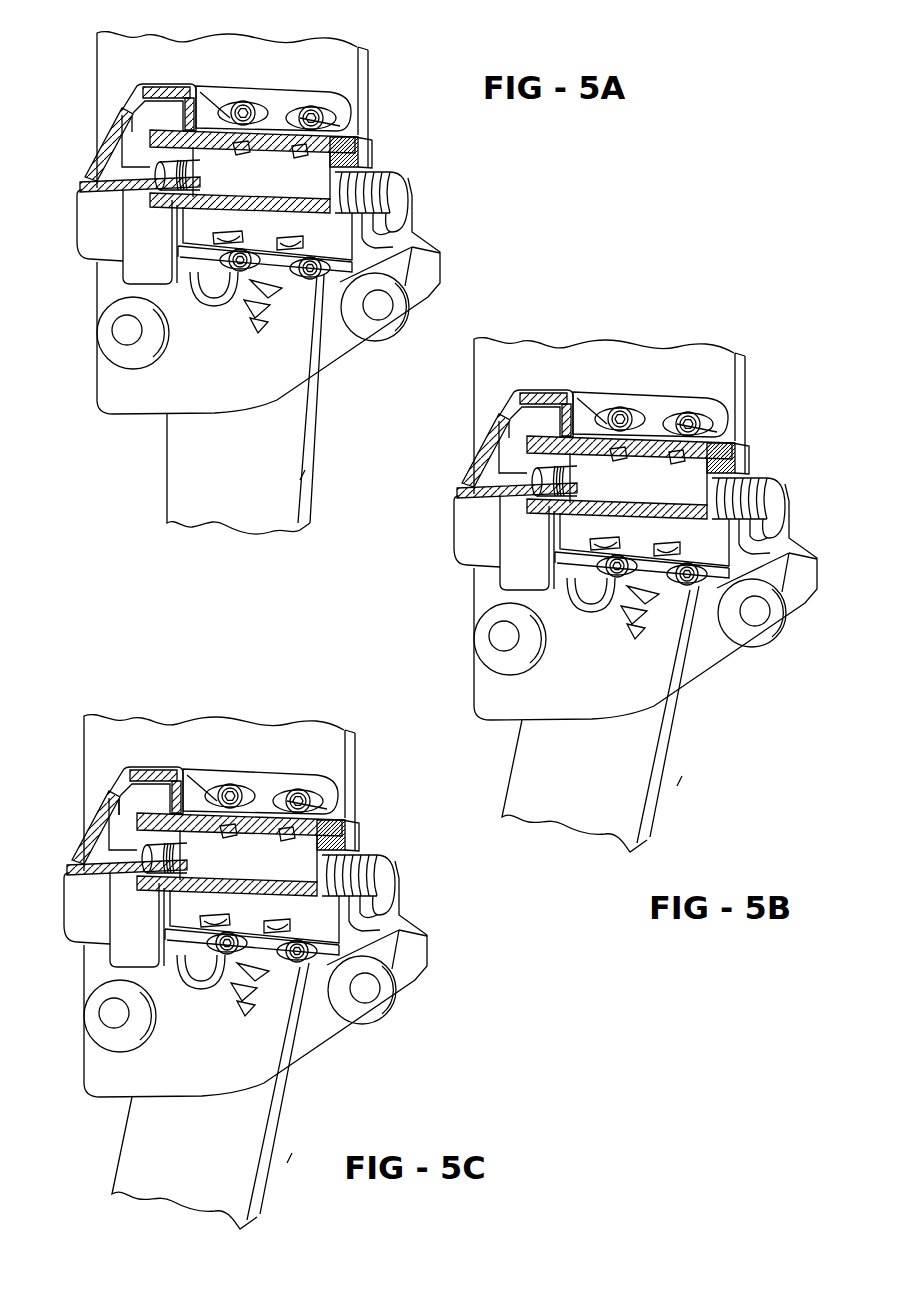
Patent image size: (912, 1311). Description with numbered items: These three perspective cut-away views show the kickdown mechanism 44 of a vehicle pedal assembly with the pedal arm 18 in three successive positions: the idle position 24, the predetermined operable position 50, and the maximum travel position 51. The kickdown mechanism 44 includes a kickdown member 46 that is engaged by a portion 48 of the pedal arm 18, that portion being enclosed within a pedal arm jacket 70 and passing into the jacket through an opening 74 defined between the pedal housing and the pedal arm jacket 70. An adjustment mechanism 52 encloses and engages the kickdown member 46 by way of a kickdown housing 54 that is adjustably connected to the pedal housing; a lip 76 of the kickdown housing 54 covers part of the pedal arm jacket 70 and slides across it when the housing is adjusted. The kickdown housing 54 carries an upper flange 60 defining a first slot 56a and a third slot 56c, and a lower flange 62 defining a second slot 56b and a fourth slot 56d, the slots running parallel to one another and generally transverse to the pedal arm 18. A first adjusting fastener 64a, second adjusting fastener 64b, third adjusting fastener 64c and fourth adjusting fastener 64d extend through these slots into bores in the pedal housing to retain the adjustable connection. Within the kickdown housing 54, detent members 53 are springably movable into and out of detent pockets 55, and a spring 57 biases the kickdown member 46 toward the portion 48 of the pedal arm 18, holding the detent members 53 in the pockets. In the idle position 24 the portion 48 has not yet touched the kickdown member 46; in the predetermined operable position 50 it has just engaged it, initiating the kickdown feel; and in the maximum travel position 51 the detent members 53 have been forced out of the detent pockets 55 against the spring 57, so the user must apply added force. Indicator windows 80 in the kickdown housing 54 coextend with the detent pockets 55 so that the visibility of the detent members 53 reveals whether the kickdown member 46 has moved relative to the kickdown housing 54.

In FIG. 5A, the pedal arm 18 is at (166, 478).
In FIG. 5B, the pedal arm 18 is at (544, 786).
In FIG. 5C, the pedal arm 18 is at (154, 1163).
In FIG. 5A, the idle position 24 is at (338, 472).
In FIG. 5B, the predetermined operable position 50 is at (722, 745).
In FIG. 5C, the maximum travel position 51 is at (317, 1121).
In FIG. 5A, the kickdown mechanism 44 is at (383, 160).
In FIG. 5B, the kickdown mechanism 44 is at (673, 456).
In FIG. 5C, the kickdown mechanism 44 is at (283, 833).
In FIG. 5A, the kickdown member 46 is at (180, 233).
In FIG. 5B, the kickdown member 46 is at (538, 528).
In FIG. 5C, the kickdown member 46 is at (148, 905).
In FIG. 5A, the portion of the pedal arm 48 is at (77, 190).
In FIG. 5B, the portion of the pedal arm 48 is at (492, 443).
In FIG. 5C, the portion of the pedal arm 48 is at (102, 820).
In FIG. 5A, the adjustment mechanism 52 is at (332, 318).
In FIG. 5B, the adjustment mechanism 52 is at (645, 529).
In FIG. 5C, the adjustment mechanism 52 is at (255, 906).
In FIG. 5A, the detent members 53 is at (226, 172).
In FIG. 5B, the detent members 53 is at (644, 522).
In FIG. 5C, the detent members 53 is at (254, 899).
In FIG. 5A, the kickdown housing 54 is at (373, 280).
In FIG. 5B, the kickdown housing 54 is at (637, 623).
In FIG. 5C, the kickdown housing 54 is at (245, 1000).
In FIG. 5A, the detent pockets 55 is at (300, 158).
In FIG. 5B, the detent pockets 55 is at (647, 476).
In FIG. 5C, the detent pockets 55 is at (257, 853).
In FIG. 5A, the first slot 56a is at (217, 118).
In FIG. 5B, the first slot 56a is at (560, 392).
In FIG. 5C, the first slot 56a is at (170, 769).
In FIG. 5A, the second slot 56b is at (262, 330).
In FIG. 5B, the second slot 56b is at (613, 628).
In FIG. 5C, the second slot 56b is at (223, 1005).
In FIG. 5A, the third slot 56c is at (332, 119).
In FIG. 5B, the third slot 56c is at (743, 389).
In FIG. 5C, the third slot 56c is at (353, 766).
In FIG. 5A, the fourth slot 56d is at (322, 335).
In FIG. 5B, the fourth slot 56d is at (673, 714).
In FIG. 5C, the fourth slot 56d is at (283, 1091).
In FIG. 5A, the spring 57 is at (380, 214).
In FIG. 5B, the spring 57 is at (758, 524).
In FIG. 5C, the spring 57 is at (381, 885).
In FIG. 5A, the upper flange 60 is at (272, 88).
In FIG. 5B, the upper flange 60 is at (650, 380).
In FIG. 5C, the upper flange 60 is at (260, 757).
In FIG. 5A, the lower flange 62 is at (289, 330).
In FIG. 5B, the lower flange 62 is at (642, 626).
In FIG. 5C, the lower flange 62 is at (252, 1003).
In FIG. 5A, the first adjusting fastener 64a is at (243, 100).
In FIG. 5B, the first adjusting fastener 64a is at (613, 376).
In FIG. 5C, the first adjusting fastener 64a is at (223, 753).
In FIG. 5A, the second adjusting fastener 64b is at (232, 272).
In FIG. 5B, the second adjusting fastener 64b is at (593, 616).
In FIG. 5C, the second adjusting fastener 64b is at (203, 993).
In FIG. 5A, the third adjusting fastener 64c is at (310, 105).
In FIG. 5B, the third adjusting fastener 64c is at (688, 397).
In FIG. 5C, the third adjusting fastener 64c is at (298, 774).
In FIG. 5A, the fourth adjusting fastener 64d is at (300, 300).
In FIG. 5B, the fourth adjusting fastener 64d is at (661, 655).
In FIG. 5C, the fourth adjusting fastener 64d is at (271, 1032).
In FIG. 5A, the pedal arm jacket 70 is at (114, 173).
In FIG. 5B, the pedal arm jacket 70 is at (491, 456).
In FIG. 5C, the pedal arm jacket 70 is at (101, 833).
In FIG. 5C, the opening 74 is at (80, 776).
In FIG. 5A, the lip 76 is at (132, 218).
In FIG. 5B, the lip 76 is at (457, 531).
In FIG. 5C, the lip 76 is at (67, 908).
In FIG. 5A, the indicator windows 80 is at (298, 240).
In FIG. 5B, the indicator windows 80 is at (592, 547).
In FIG. 5C, the indicator windows 80 is at (202, 924).